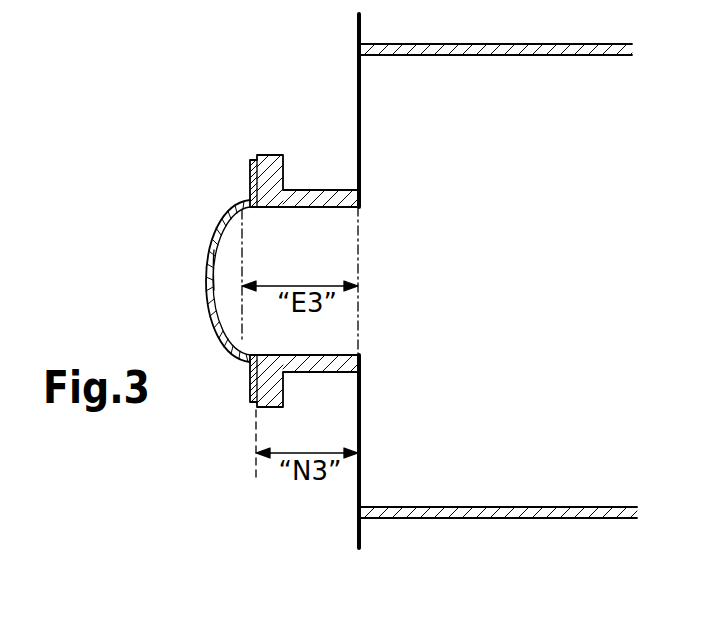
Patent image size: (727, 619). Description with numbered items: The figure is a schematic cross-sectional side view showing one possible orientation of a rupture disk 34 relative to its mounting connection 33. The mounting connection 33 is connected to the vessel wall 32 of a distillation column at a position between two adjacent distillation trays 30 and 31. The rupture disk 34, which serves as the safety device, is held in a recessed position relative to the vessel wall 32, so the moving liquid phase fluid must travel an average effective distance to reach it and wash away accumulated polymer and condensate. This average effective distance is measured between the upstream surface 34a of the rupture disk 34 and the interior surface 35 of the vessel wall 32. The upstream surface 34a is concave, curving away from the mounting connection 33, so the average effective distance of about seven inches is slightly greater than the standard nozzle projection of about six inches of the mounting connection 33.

The distillation tray 30 is at (460, 510).
The distillation tray 31 is at (430, 50).
The vessel wall 32 is at (359, 98).
The mounting connection 33 is at (266, 168).
The rupture disk 34 is at (217, 230).
The upstream surface 34a is at (232, 264).
The interior surface 35 is at (377, 143).